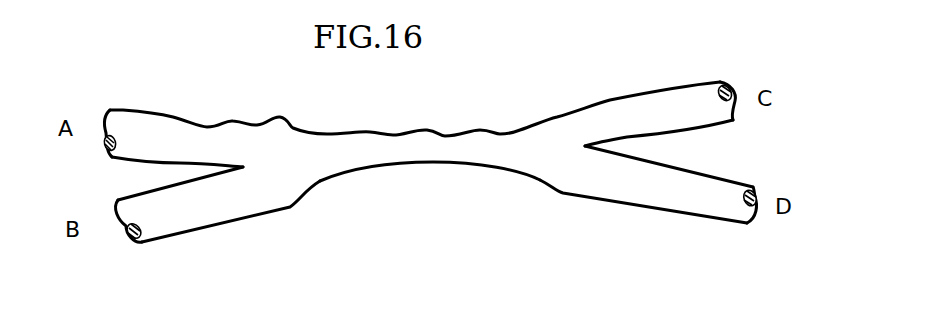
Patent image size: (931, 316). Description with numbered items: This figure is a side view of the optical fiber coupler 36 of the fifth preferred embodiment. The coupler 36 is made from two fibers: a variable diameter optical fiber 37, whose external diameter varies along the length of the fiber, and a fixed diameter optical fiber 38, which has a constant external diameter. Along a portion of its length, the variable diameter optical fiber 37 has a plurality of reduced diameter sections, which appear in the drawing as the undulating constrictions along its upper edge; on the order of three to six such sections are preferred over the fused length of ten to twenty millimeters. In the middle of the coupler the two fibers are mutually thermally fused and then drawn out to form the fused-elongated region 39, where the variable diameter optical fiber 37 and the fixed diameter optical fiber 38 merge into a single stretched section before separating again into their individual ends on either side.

The optical fiber coupler 36 is at (530, 107).
The variable diameter optical fiber 37 is at (152, 115).
The fixed diameter optical fiber 38 is at (193, 230).
The fused-elongated region 39 is at (440, 155).